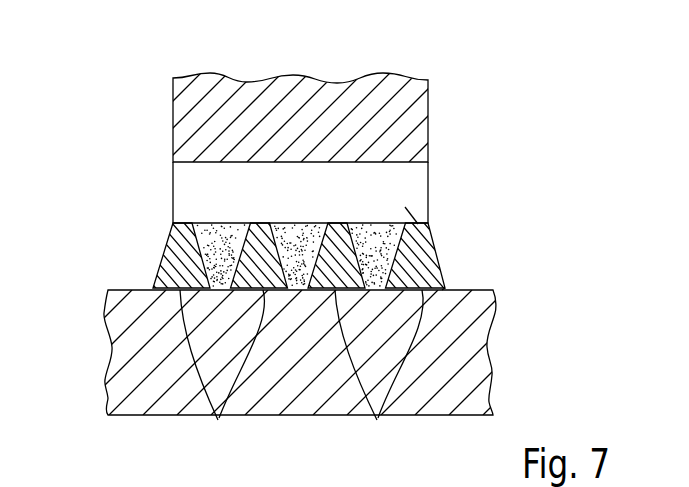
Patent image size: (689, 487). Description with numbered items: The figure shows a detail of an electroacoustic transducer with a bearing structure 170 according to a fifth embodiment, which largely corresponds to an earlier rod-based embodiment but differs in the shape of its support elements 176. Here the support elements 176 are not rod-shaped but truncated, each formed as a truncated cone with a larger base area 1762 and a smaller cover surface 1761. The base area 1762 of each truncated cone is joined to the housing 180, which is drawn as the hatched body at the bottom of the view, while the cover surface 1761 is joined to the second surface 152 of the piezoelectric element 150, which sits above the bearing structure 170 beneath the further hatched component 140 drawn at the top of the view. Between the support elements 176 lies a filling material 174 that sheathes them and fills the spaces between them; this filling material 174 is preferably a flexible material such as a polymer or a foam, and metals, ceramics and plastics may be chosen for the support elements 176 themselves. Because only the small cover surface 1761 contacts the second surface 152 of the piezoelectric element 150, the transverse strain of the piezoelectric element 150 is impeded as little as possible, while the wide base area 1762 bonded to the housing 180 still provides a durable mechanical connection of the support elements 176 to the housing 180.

The upper substrate / component 140 is at (326, 95).
The piezoelectric element 150 is at (188, 193).
The second surface 152 is at (408, 237).
The bearing structure 170 is at (106, 268).
The filling material 174 is at (377, 240).
The support elements 176 is at (377, 437).
The cover surface 1761 is at (430, 213).
The base area 1762 is at (442, 290).
The housing 180 is at (305, 398).